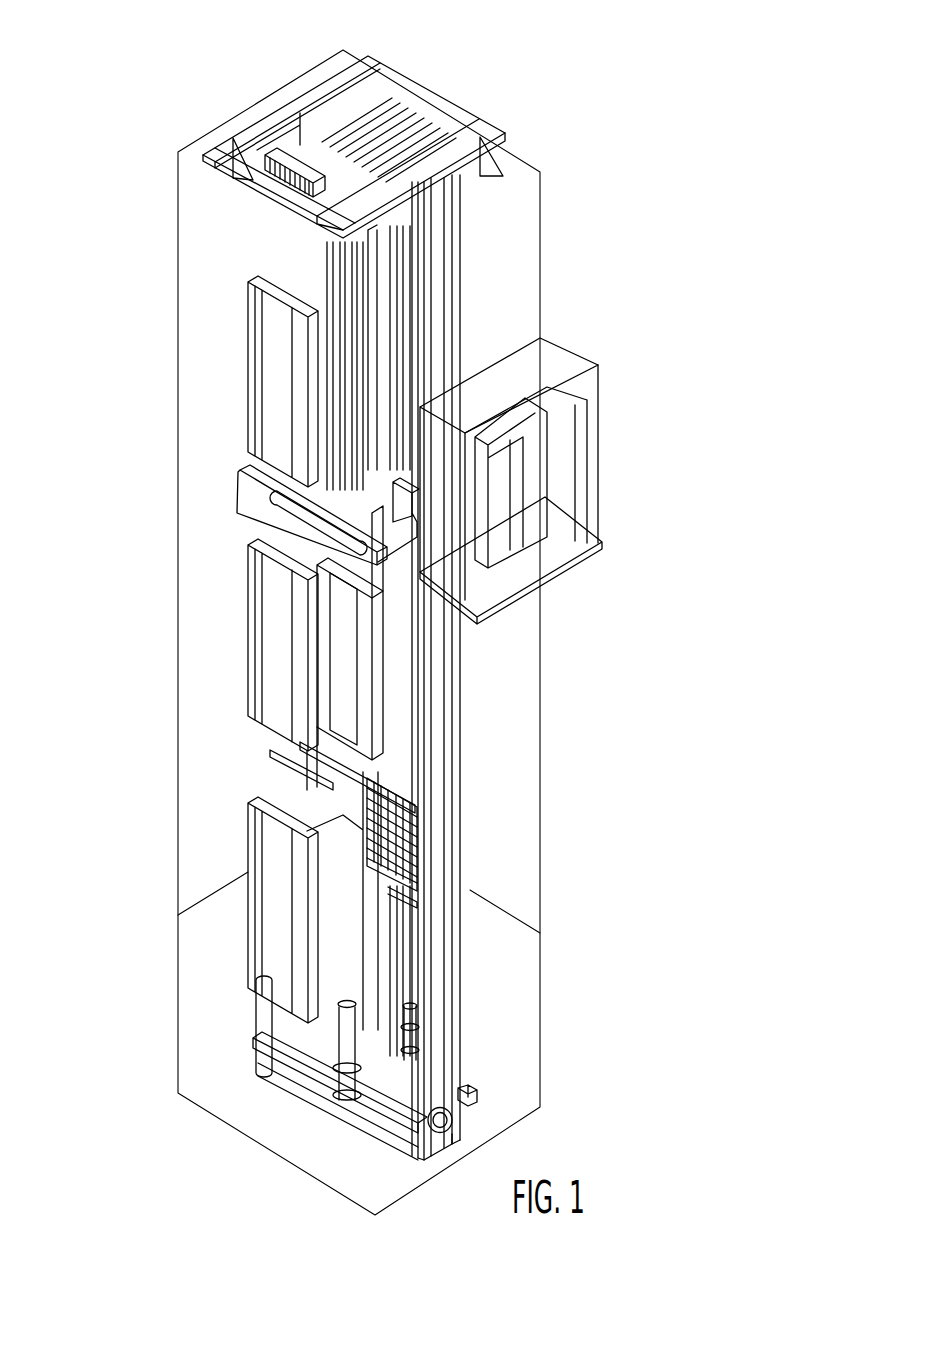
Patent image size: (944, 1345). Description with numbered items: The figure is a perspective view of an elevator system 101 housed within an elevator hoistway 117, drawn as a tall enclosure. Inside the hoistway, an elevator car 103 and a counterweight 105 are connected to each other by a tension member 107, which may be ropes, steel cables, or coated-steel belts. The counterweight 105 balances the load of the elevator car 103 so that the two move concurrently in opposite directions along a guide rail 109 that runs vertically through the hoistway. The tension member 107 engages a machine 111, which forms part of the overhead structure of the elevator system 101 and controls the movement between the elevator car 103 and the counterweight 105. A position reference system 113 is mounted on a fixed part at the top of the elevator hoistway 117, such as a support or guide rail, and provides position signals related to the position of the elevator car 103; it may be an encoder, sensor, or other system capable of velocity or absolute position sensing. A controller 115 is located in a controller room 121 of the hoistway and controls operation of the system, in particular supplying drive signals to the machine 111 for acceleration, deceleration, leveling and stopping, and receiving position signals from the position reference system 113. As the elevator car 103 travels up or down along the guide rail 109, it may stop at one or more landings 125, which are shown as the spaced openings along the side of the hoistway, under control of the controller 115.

The elevator system 101 is at (553, 110).
The elevator car 103 is at (360, 679).
The counterweight 105 is at (418, 851).
The tension member 107 is at (362, 385).
The guide rail 109 is at (440, 774).
The machine 111 is at (285, 166).
The position reference system 113 is at (433, 232).
The controller 115 is at (543, 485).
The elevator hoistway 117 is at (219, 767).
The controller room 121 is at (598, 372).
The landings 125 is at (240, 366).